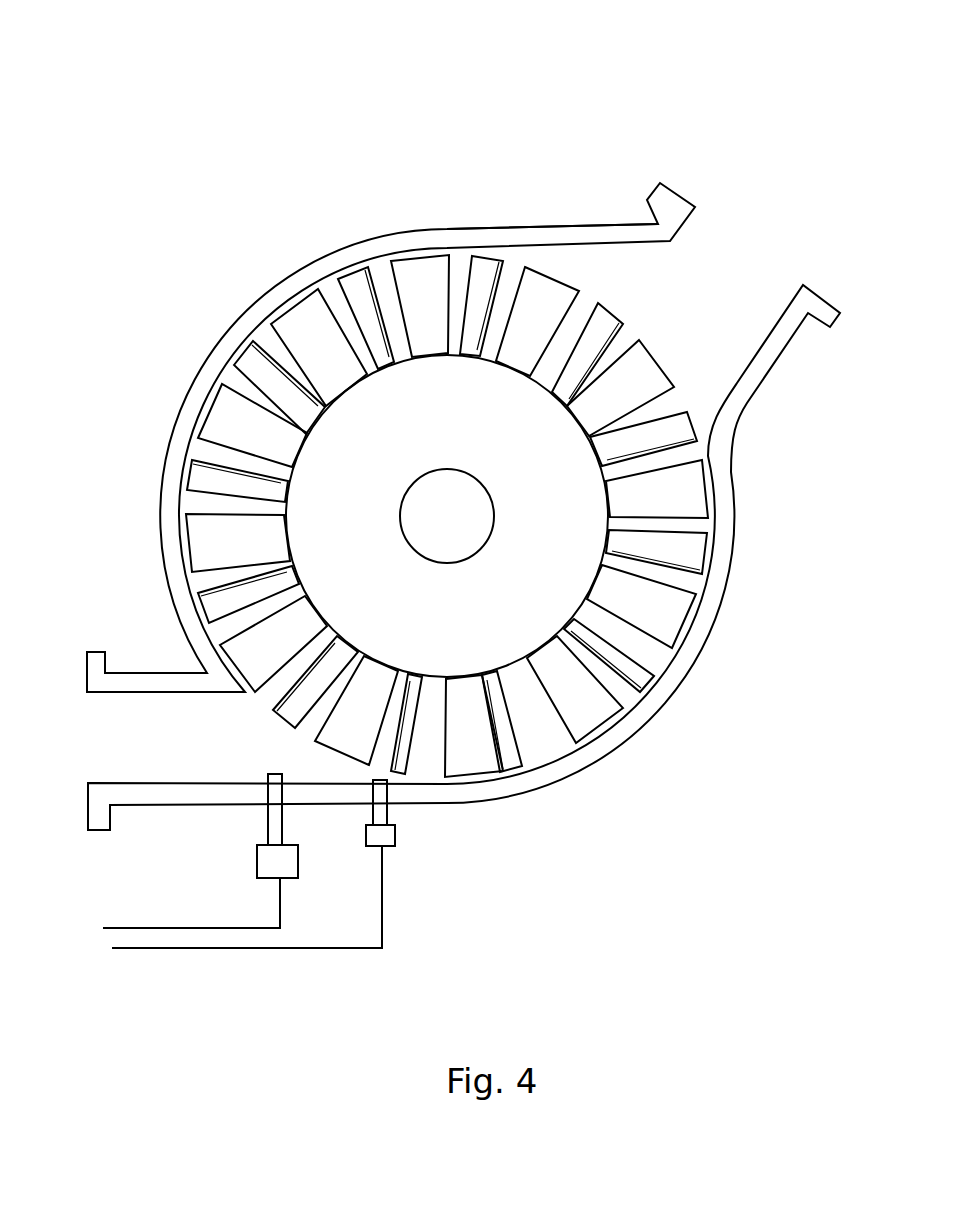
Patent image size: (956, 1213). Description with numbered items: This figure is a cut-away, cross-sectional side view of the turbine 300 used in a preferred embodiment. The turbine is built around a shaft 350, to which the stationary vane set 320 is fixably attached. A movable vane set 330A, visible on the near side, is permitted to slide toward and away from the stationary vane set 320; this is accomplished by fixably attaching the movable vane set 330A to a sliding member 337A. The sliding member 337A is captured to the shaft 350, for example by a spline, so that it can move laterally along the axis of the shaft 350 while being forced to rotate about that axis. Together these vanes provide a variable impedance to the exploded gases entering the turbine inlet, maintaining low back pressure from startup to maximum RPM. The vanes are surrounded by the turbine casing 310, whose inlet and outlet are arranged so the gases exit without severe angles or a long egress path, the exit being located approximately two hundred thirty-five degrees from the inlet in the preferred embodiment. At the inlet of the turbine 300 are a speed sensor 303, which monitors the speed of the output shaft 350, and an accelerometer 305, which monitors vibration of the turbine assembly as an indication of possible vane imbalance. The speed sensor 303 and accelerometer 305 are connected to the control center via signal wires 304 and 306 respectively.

The turbine 300 is at (727, 67).
The turbine casing 310 is at (182, 435).
The stationary vane set 320 is at (310, 327).
The movable vane set 330A is at (253, 363).
The sliding member 337A is at (398, 405).
The shaft 350 is at (452, 495).
The speed sensor 303 is at (393, 845).
The signal wire 304 is at (382, 892).
The accelerometer 305 is at (282, 863).
The signal wire 306 is at (243, 930).